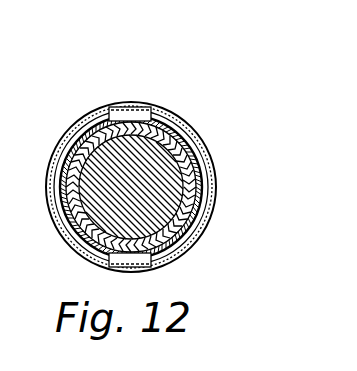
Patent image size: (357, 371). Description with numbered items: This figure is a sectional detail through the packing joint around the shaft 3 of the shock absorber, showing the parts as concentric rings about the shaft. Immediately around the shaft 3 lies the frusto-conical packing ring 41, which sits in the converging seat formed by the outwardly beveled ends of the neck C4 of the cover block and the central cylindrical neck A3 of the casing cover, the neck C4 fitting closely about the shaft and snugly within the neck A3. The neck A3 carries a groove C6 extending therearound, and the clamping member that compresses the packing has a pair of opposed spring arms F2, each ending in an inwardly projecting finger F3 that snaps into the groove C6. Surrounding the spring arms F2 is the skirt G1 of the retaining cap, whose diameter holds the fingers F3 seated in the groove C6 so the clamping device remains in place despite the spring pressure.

The shaft 3 is at (178, 157).
The packing ring 41 is at (70, 172).
The central cylindrical neck A3 is at (195, 160).
The groove C6 is at (207, 193).
The neck C4 is at (72, 217).
The skirt G1 is at (203, 237).
The finger F3 is at (107, 263).
The spring arm F2 is at (143, 263).